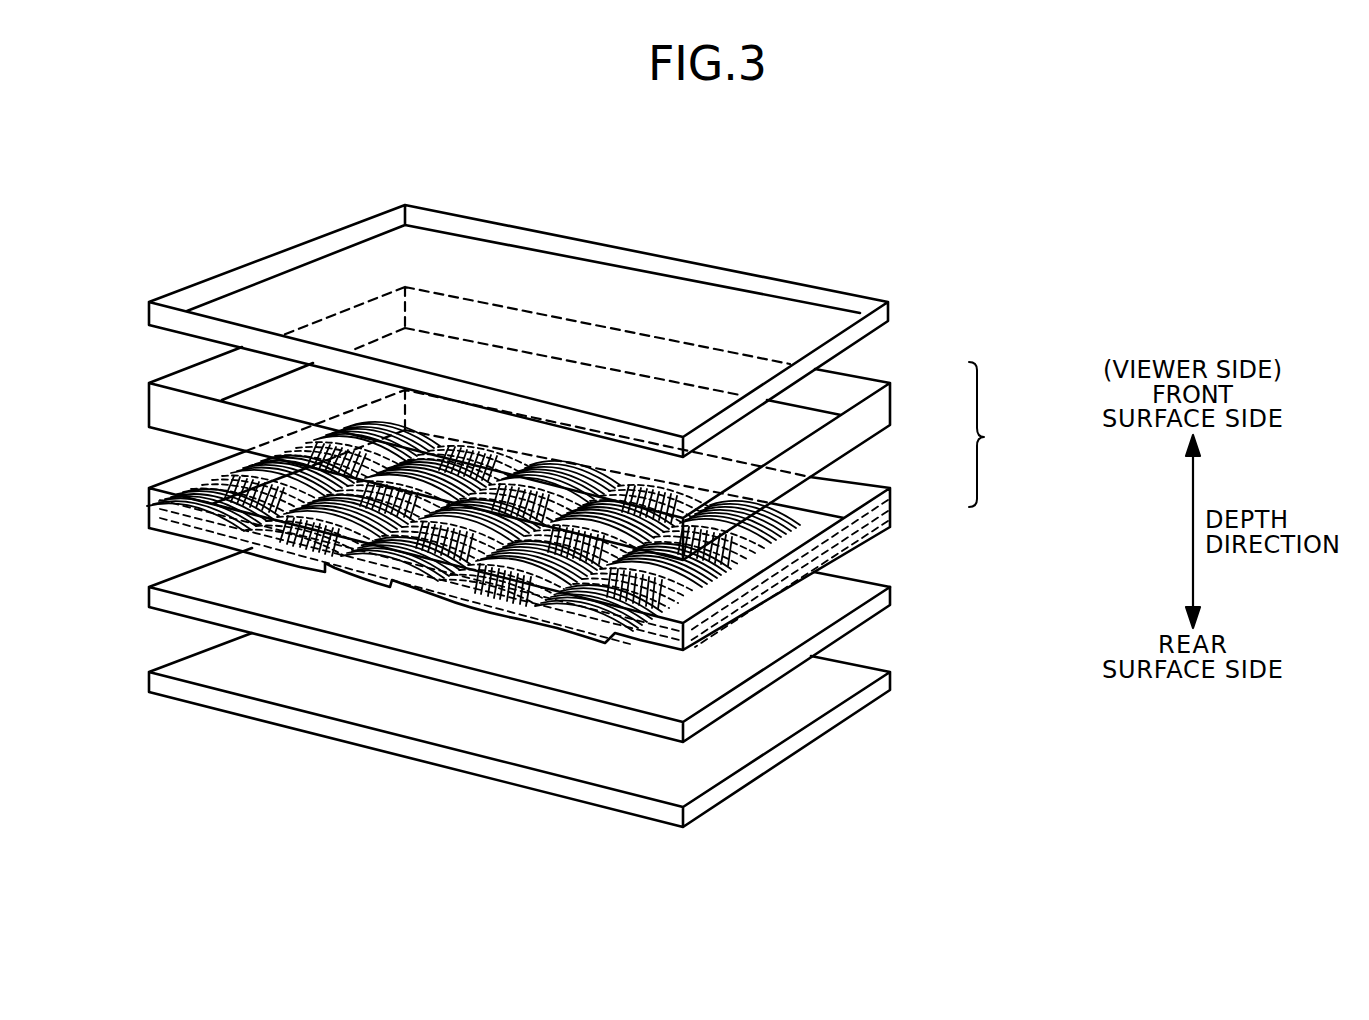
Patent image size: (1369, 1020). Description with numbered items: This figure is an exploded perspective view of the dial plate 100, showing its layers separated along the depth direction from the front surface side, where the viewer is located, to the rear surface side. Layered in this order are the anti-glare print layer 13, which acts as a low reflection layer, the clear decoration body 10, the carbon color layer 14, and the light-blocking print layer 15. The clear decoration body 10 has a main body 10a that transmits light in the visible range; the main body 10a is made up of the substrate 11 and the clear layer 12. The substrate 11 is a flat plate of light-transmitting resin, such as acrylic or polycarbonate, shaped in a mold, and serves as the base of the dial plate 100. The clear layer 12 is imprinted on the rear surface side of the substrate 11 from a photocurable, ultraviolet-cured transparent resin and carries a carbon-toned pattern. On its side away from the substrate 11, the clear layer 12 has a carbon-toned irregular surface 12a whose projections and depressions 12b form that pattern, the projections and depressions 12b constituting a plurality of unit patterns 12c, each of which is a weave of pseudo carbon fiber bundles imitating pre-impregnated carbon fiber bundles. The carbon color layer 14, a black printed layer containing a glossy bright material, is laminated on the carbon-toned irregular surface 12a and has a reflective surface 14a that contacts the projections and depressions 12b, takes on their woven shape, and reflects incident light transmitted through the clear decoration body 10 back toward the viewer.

The dial plate 100 is at (690, 200).
The anti-glare (AG) print layer 13 is at (897, 307).
The substrate 11 is at (897, 401).
The clear decoration body 10 is at (572, 468).
The main body 10a is at (1026, 434).
The clear layer 12 is at (526, 520).
The carbon-toned irregular surface 12a is at (847, 553).
The projections and depressions 12b is at (283, 465).
The unit pattern 12c is at (397, 526).
The carbon color layer 14 is at (569, 645).
The reflective surface 14a is at (827, 597).
The light-blocking print layer 15 is at (897, 677).